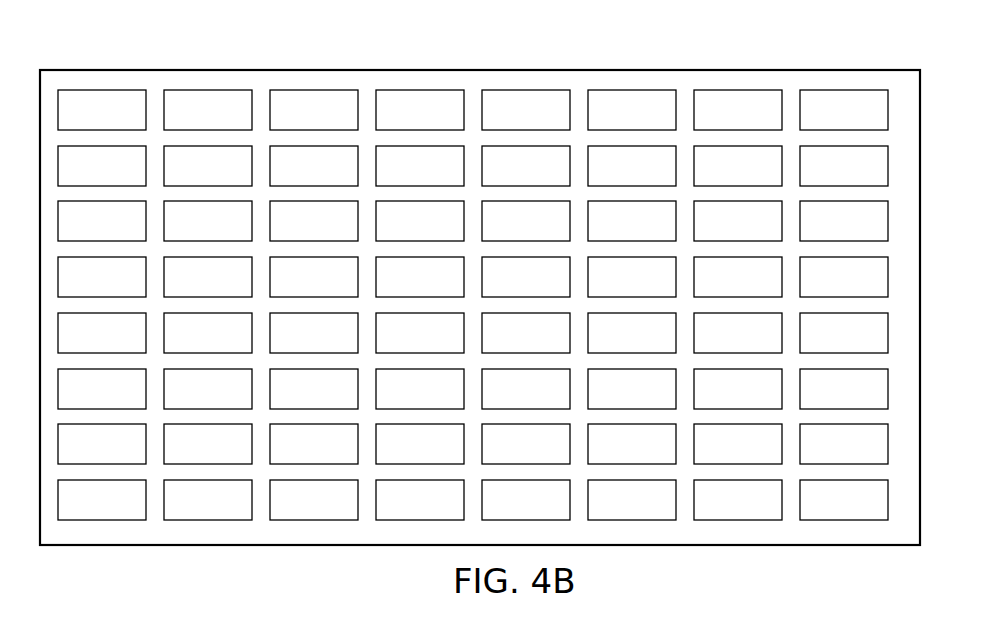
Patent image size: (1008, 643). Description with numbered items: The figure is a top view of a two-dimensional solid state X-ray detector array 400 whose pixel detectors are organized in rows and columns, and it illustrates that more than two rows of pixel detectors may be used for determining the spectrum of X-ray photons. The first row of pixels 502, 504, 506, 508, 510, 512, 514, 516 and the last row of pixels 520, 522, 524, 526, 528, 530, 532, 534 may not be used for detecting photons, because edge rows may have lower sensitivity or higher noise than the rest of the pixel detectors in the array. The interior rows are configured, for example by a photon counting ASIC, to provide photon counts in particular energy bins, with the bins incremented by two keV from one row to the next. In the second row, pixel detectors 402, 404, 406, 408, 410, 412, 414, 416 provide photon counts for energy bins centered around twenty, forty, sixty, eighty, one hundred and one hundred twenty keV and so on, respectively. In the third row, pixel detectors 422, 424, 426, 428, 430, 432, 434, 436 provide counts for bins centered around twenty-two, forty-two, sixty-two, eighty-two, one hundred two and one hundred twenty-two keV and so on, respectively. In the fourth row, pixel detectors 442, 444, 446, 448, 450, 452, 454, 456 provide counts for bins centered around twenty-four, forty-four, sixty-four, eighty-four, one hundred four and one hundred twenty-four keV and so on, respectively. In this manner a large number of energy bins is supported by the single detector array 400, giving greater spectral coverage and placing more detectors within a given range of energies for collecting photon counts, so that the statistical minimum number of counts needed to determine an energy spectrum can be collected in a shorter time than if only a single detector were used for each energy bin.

The detector array 400 is at (480, 275).
The pixel detector 402 is at (102, 166).
The pixel detector 404 is at (208, 166).
The pixel detector 406 is at (314, 166).
The pixel detector 408 is at (420, 166).
The pixel detector 410 is at (526, 166).
The pixel detector 412 is at (632, 166).
The pixel detector 414 is at (738, 166).
The pixel detector 416 is at (844, 166).
The pixel detector 422 is at (102, 221).
The pixel detector 424 is at (208, 221).
The pixel detector 426 is at (314, 221).
The pixel detector 428 is at (420, 221).
The pixel detector 430 is at (526, 221).
The pixel detector 432 is at (632, 221).
The pixel detector 434 is at (738, 221).
The pixel detector 436 is at (844, 221).
The pixel detector 442 is at (102, 277).
The pixel detector 444 is at (208, 277).
The pixel detector 446 is at (314, 277).
The pixel detector 448 is at (420, 277).
The pixel detector 450 is at (526, 277).
The pixel detector 452 is at (632, 277).
The pixel detector 454 is at (738, 277).
The pixel detector 456 is at (844, 277).
The pixel 502 is at (102, 110).
The pixel 504 is at (208, 110).
The pixel 506 is at (314, 110).
The pixel 508 is at (420, 110).
The pixel 510 is at (526, 110).
The pixel 512 is at (632, 110).
The pixel 514 is at (738, 110).
The pixel 516 is at (844, 110).
The pixel 520 is at (102, 500).
The pixel 522 is at (208, 500).
The pixel 524 is at (314, 500).
The pixel 526 is at (420, 500).
The pixel 528 is at (526, 500).
The pixel 530 is at (632, 500).
The pixel 532 is at (738, 500).
The pixel 534 is at (844, 500).